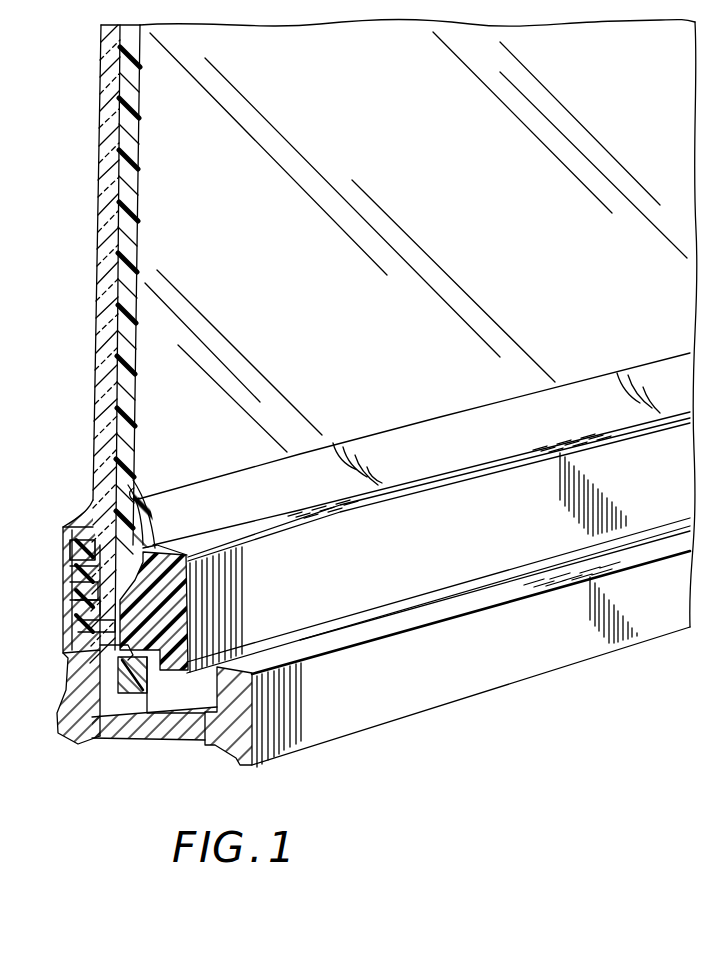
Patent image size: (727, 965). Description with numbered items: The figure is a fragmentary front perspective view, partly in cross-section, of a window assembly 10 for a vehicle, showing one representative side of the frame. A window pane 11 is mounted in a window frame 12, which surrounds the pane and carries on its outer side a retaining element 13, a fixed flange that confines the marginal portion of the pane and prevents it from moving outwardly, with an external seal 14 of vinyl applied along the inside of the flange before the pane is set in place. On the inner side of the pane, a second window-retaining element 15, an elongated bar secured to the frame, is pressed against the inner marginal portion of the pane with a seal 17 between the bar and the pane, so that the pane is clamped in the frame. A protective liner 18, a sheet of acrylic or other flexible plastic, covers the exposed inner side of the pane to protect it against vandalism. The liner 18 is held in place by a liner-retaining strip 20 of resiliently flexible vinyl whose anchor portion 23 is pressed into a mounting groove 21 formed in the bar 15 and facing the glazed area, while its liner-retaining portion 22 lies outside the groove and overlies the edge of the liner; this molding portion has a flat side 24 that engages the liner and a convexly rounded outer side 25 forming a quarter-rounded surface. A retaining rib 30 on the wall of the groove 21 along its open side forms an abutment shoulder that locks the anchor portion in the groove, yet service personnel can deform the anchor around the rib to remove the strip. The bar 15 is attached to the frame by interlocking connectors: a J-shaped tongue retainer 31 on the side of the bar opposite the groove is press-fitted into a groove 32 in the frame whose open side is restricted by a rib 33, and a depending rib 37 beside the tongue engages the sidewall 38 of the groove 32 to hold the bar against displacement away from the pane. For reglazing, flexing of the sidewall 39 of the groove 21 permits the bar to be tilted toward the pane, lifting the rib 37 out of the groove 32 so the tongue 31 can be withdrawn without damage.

The window assembly 10 is at (94, 311).
The window pane 11 is at (100, 208).
The window frame 12 is at (62, 677).
The retaining element 13 is at (80, 603).
The external seal 14 is at (78, 622).
The second window-retaining element 15 is at (290, 603).
The seal 17 is at (168, 606).
The protective liner 18 is at (493, 216).
The liner-retaining strip 20 is at (349, 454).
The mounting groove 21 is at (122, 585).
The liner-retaining portion 22 is at (136, 516).
The anchor portion 23 is at (130, 551).
The flat side 24 is at (131, 492).
The convexly rounded outer side 25 is at (455, 425).
The retaining rib 30 is at (150, 546).
The tongue retainer 31 is at (126, 690).
The groove 32 is at (150, 697).
The rib 33 is at (128, 651).
The depending rib 37 is at (165, 664).
The sidewall 38 is at (132, 694).
The sidewall 39 is at (130, 569).